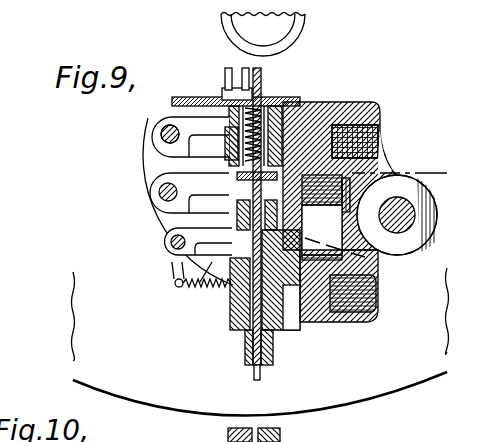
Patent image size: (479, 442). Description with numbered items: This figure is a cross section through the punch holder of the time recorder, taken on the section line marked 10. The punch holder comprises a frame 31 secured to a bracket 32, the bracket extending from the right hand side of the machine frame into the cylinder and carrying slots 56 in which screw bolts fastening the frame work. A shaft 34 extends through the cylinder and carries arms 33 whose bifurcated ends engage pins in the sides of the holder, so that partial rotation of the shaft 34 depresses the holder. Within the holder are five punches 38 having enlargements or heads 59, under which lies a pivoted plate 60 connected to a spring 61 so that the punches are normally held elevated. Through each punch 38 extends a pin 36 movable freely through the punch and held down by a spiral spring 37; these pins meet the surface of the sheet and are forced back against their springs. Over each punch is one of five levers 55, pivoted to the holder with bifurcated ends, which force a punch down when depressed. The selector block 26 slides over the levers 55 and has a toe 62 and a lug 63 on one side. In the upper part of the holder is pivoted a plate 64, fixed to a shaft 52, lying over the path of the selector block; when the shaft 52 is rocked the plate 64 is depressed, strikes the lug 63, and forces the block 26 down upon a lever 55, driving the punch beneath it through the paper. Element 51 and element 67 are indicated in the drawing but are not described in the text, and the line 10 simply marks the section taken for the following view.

The section line 10- 10 is at (72, 172).
The selector block 26 is at (262, 100).
The frame 31 is at (233, 301).
The bracket 32 is at (375, 116).
The arms 33 is at (382, 252).
The shaft 34 is at (416, 208).
The pin 36 is at (254, 374).
The spiral spring 37 is at (286, 99).
The punch 38 is at (270, 345).
The axis line 51 is at (356, 174).
The shaft 52 is at (164, 131).
The levers 55 is at (170, 240).
The slots 56 is at (326, 217).
The heads 59 is at (240, 212).
The pivoted plate 60 is at (184, 288).
The spring 61 is at (206, 290).
The toe 62 is at (160, 188).
The lug 63 is at (226, 150).
The plate 64 is at (172, 126).
The bracket 67 is at (230, 94).